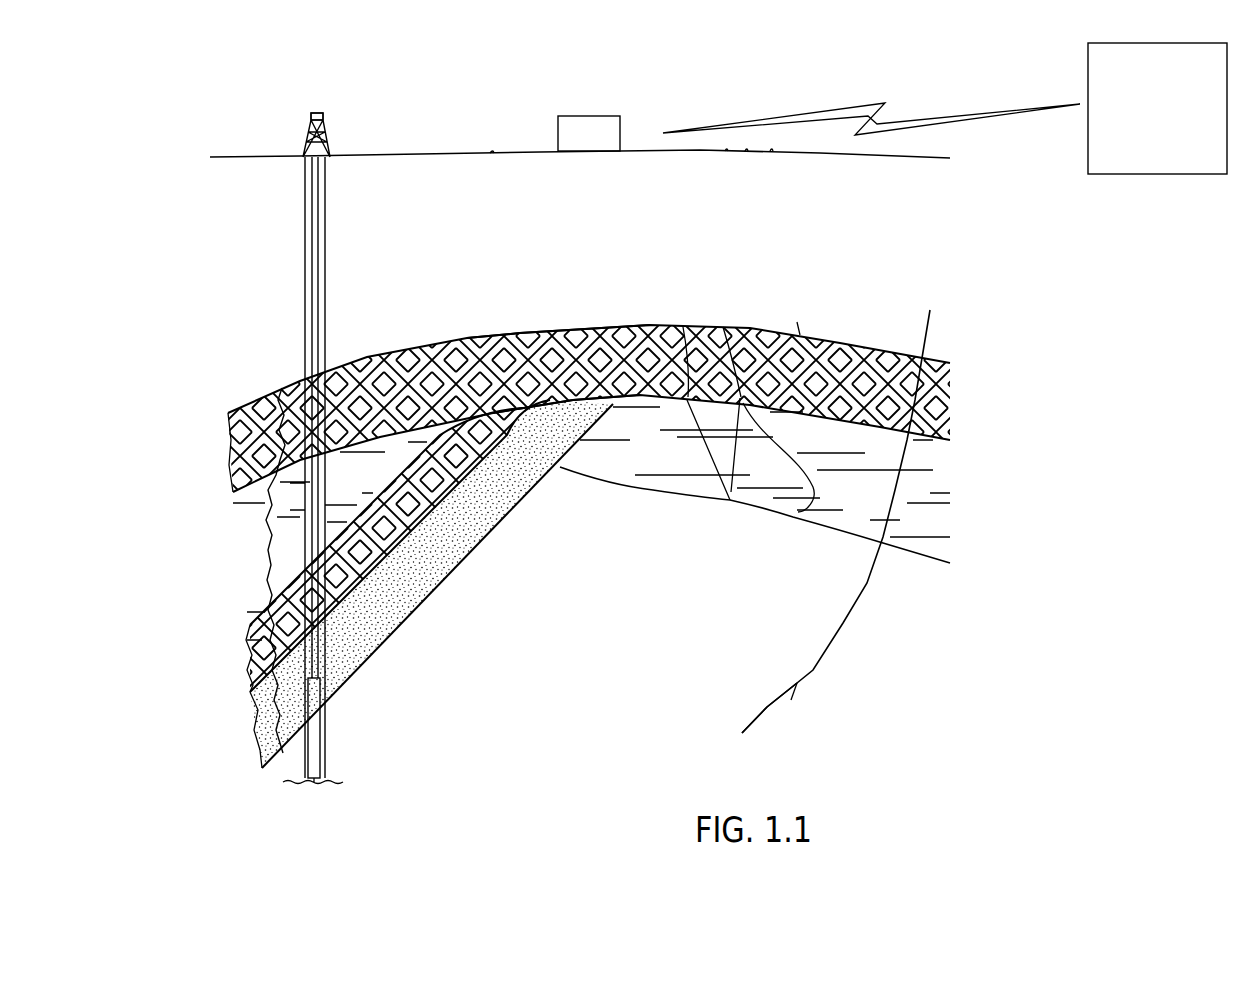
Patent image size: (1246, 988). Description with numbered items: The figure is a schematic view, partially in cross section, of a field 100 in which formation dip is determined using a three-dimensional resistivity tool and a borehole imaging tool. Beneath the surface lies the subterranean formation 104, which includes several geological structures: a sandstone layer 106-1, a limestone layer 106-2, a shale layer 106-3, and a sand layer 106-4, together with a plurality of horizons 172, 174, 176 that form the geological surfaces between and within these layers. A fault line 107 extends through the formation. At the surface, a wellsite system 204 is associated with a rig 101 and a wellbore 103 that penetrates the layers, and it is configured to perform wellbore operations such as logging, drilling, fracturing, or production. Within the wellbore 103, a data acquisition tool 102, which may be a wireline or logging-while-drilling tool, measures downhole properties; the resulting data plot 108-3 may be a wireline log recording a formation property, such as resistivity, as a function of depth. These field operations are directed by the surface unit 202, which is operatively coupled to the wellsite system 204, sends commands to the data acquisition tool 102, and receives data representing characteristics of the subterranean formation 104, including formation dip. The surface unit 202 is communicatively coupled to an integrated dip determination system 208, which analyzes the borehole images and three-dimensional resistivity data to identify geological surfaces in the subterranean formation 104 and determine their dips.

The field 100 is at (874, 57).
The rig 101 is at (300, 110).
The wellsite system 204 is at (340, 131).
The wellbore 103 is at (329, 226).
The data acquisition tool 102 is at (322, 732).
The surface unit 202 is at (607, 144).
The integrated dip determination system 208 is at (1146, 145).
The sandstone layer 106-1 is at (452, 390).
The limestone layer 106-2 is at (380, 484).
The shale layer 106-3 is at (437, 501).
The sand layer 106-4 is at (476, 551).
The subterranean formation 104 is at (608, 579).
The fault line 107 is at (925, 328).
The data plot 108-3 is at (280, 568).
The horizon 172 is at (552, 324).
The horizon 174 is at (585, 391).
The horizon 176 is at (702, 498).